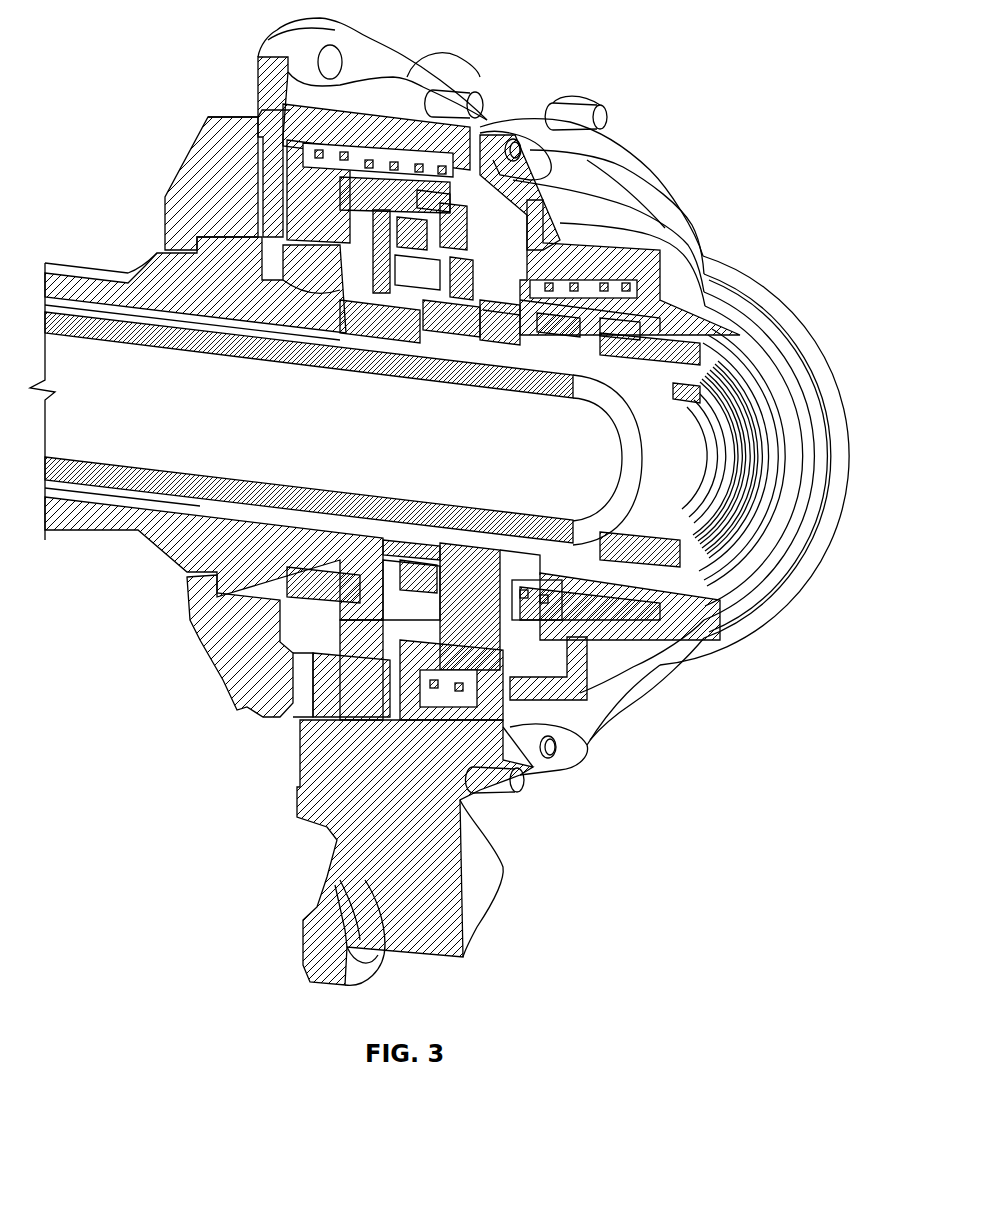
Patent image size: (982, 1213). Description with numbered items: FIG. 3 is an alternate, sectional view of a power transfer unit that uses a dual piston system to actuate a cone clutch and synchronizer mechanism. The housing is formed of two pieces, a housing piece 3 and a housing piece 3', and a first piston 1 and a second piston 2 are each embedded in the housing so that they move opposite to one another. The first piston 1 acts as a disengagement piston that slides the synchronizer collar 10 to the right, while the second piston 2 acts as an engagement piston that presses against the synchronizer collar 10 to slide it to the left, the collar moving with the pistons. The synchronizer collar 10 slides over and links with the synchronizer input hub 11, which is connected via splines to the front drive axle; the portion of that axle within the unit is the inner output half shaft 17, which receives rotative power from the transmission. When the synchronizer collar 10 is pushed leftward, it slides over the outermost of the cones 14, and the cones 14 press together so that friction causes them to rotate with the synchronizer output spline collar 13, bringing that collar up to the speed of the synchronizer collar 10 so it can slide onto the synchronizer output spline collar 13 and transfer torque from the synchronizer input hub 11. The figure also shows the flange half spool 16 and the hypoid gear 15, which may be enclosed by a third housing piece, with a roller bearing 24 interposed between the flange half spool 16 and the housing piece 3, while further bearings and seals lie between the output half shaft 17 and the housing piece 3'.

The first piston 1 is at (403, 167).
The second piston 2 is at (493, 203).
The housing piece 3 is at (349, 127).
The housing piece 3' is at (637, 408).
The synchronizer collar 10 is at (428, 197).
The synchronizer input hub 11 is at (493, 350).
The synchronizer output spline collar 13 is at (335, 333).
The cone 14 is at (373, 340).
The hypoid gear 15 is at (197, 183).
The flange half spool 16 is at (157, 273).
The inner output half shaft 17 is at (82, 332).
The roller bearing 24 is at (297, 575).